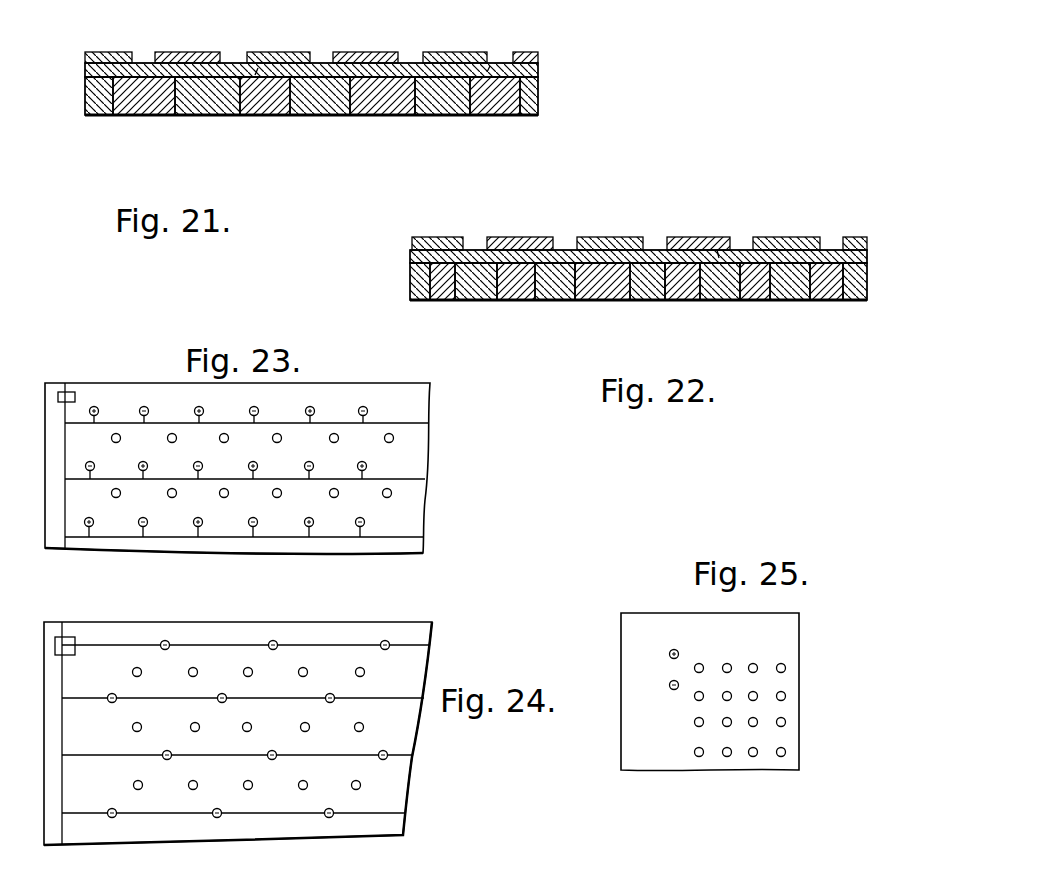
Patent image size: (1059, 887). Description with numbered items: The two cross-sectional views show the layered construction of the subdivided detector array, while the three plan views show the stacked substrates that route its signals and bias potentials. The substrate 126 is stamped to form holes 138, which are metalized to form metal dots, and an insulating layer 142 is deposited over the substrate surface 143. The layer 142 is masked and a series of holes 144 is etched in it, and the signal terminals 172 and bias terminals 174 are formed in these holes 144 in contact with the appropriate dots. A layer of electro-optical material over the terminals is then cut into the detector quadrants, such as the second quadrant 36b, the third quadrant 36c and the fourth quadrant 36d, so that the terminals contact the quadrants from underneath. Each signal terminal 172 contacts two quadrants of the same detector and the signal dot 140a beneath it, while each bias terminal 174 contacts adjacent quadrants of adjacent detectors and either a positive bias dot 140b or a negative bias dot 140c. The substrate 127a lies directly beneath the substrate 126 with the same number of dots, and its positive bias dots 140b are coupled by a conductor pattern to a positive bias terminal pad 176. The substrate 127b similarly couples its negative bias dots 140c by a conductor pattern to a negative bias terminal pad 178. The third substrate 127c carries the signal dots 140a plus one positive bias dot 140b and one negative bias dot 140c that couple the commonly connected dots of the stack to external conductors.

In FIG. 21, the second quadrant 36b is at (118, 56).
In FIG. 21, the third quadrant 36c is at (197, 57).
In FIG. 22, the third quadrant 36c is at (543, 242).
In FIG. 22, the fourth quadrant 36d is at (432, 243).
In FIG. 21, the substrate 126 is at (452, 120).
In FIG. 22, the substrate 126 is at (425, 265).
In FIG. 23, the substrate 127a is at (432, 454).
In FIG. 24, the substrate 127b is at (435, 656).
In FIG. 25, the third substrate 127c is at (802, 646).
In FIG. 21, the holes 138 is at (118, 78).
In FIG. 22, the holes 138 is at (497, 280).
In FIG. 22, the signal dot 140a is at (497, 280).
In FIG. 23, the signal dot 140a is at (172, 489).
In FIG. 24, the signal dot 140a is at (193, 780).
In FIG. 25, the signal dot 140a is at (727, 757).
In FIG. 21, the positive bias dot 140b is at (155, 105).
In FIG. 23, the positive bias dot 140b is at (200, 408).
In FIG. 25, the positive bias dot 140b is at (679, 650).
In FIG. 21, the negative bias dot 140c is at (318, 105).
In FIG. 23, the negative bias dot 140c is at (360, 528).
In FIG. 24, the negative bias dot 140c is at (385, 640).
In FIG. 25, the negative bias dot 140c is at (671, 690).
In FIG. 21, the insulating layer 142 is at (143, 70).
In FIG. 22, the insulating layer 142 is at (414, 258).
In FIG. 22, the substrate surface 143 is at (410, 300).
In FIG. 21, the holes 144 is at (487, 72).
In FIG. 22, the holes 144 is at (717, 250).
In FIG. 22, the signal terminal 172 is at (477, 262).
In FIG. 21, the bias terminal 174 is at (86, 106).
In FIG. 22, the bias terminal 174 is at (747, 262).
In FIG. 23, the positive bias terminal pad 176 is at (65, 390).
In FIG. 24, the negative bias terminal pad 178 is at (63, 638).